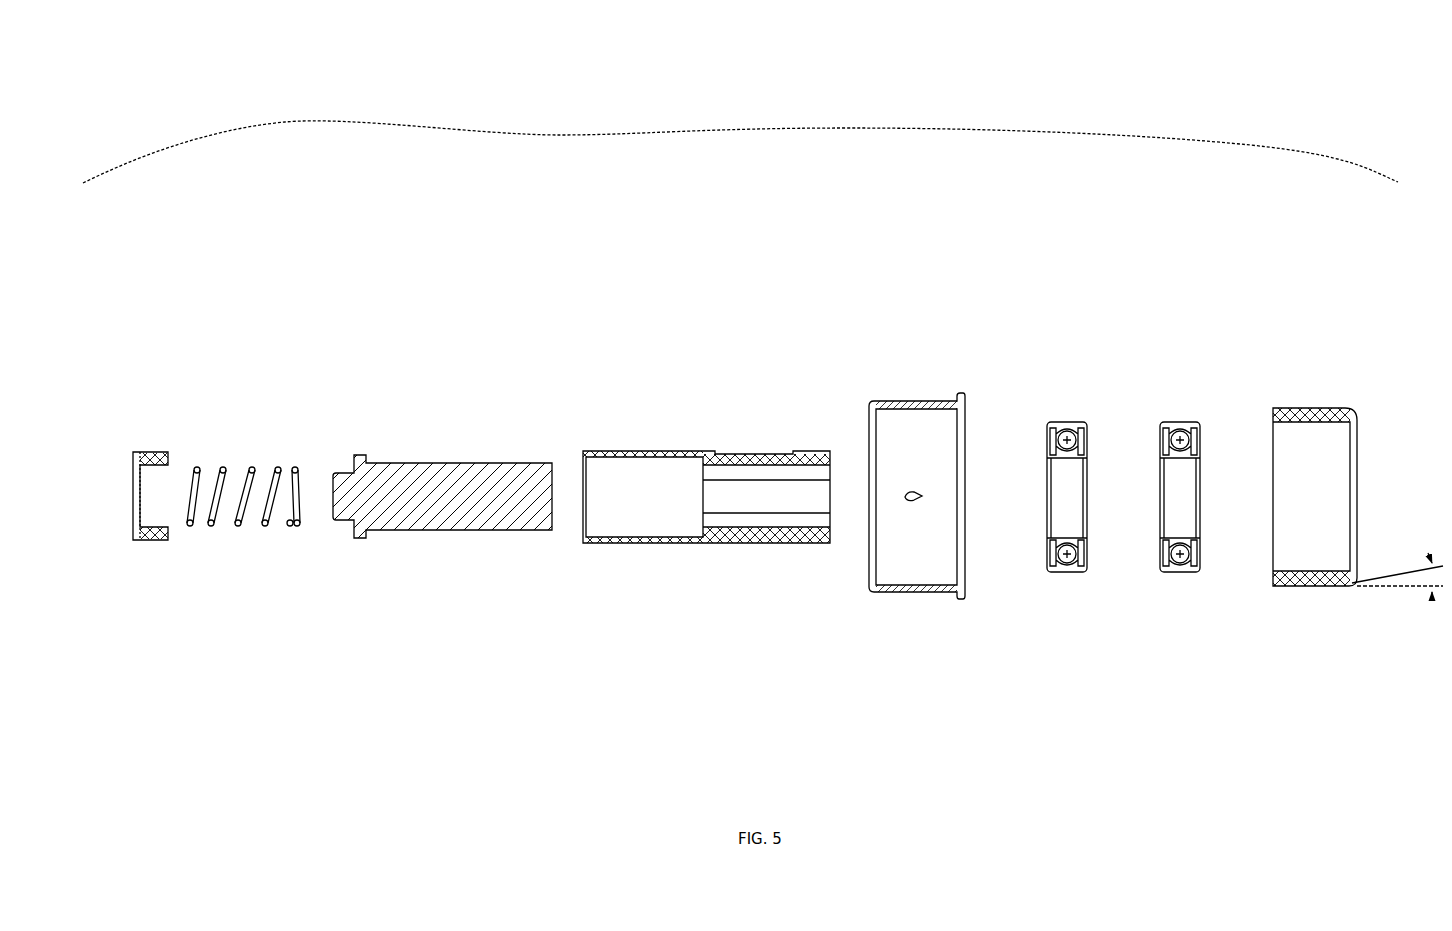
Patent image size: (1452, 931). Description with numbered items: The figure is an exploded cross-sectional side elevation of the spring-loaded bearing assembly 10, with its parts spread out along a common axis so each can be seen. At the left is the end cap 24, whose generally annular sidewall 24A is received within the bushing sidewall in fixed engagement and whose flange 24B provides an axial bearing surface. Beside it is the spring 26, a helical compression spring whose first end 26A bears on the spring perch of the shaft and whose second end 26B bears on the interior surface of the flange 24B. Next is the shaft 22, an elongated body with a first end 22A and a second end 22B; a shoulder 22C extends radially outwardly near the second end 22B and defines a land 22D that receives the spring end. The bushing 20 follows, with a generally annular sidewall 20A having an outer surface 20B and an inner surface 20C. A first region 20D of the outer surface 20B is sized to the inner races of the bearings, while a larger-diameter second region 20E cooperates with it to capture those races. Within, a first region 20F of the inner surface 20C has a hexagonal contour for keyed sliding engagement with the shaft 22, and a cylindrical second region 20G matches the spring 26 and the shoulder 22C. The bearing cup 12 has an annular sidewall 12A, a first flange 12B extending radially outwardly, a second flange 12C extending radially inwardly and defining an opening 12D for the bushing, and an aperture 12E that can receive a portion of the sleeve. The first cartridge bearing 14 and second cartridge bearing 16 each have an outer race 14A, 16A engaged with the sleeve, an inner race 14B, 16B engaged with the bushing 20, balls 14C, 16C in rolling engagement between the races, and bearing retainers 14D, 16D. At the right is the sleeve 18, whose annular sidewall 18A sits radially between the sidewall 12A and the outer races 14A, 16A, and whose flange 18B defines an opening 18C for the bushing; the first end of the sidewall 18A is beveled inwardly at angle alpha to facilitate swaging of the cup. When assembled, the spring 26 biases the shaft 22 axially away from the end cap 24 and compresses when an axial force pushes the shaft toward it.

The spring-loaded bearing assembly 10 is at (680, 131).
The bearing cup 12 is at (883, 427).
The annular sidewall 12A is at (896, 591).
The first flange 12B is at (959, 392).
The second flange 12C is at (866, 570).
The opening 12D is at (871, 497).
The aperture 12E is at (910, 505).
The first cartridge bearing 14 is at (1059, 470).
The outer race 14A is at (1055, 570).
The inner race 14B is at (1075, 566).
The bearing elements 14C is at (1071, 426).
The bearing retainer 14D is at (1050, 426).
The second cartridge bearing 16 is at (1178, 470).
The outer race 16A is at (1166, 570).
The inner race 16B is at (1188, 566).
The bearing elements 16C is at (1185, 426).
The bearing retainer 16D is at (1162, 426).
The sleeve 18 is at (1305, 450).
The annular sidewall 18A is at (1316, 588).
The flange 18B is at (1356, 562).
The opening 18C is at (1353, 465).
The bushing 20 is at (715, 474).
The annular sidewall 20A is at (677, 450).
The outer surface 20B is at (740, 539).
The inner surface 20C is at (598, 541).
The first region of the outer surface 20D is at (758, 447).
The second region of the outer surface 20E is at (606, 450).
The first region of the inner surface 20F is at (810, 500).
The second region of the inner surface 20G is at (654, 517).
The shaft 22 is at (427, 472).
The first end 22A is at (540, 531).
The second end 22B is at (352, 523).
The shoulder 22C is at (355, 453).
The land 22D is at (353, 465).
The end cap 24 is at (147, 458).
The annular sidewall 24A is at (157, 458).
The flange 24B is at (136, 526).
The spring 26 is at (251, 468).
The first end 26A is at (297, 521).
The second end 26B is at (190, 500).